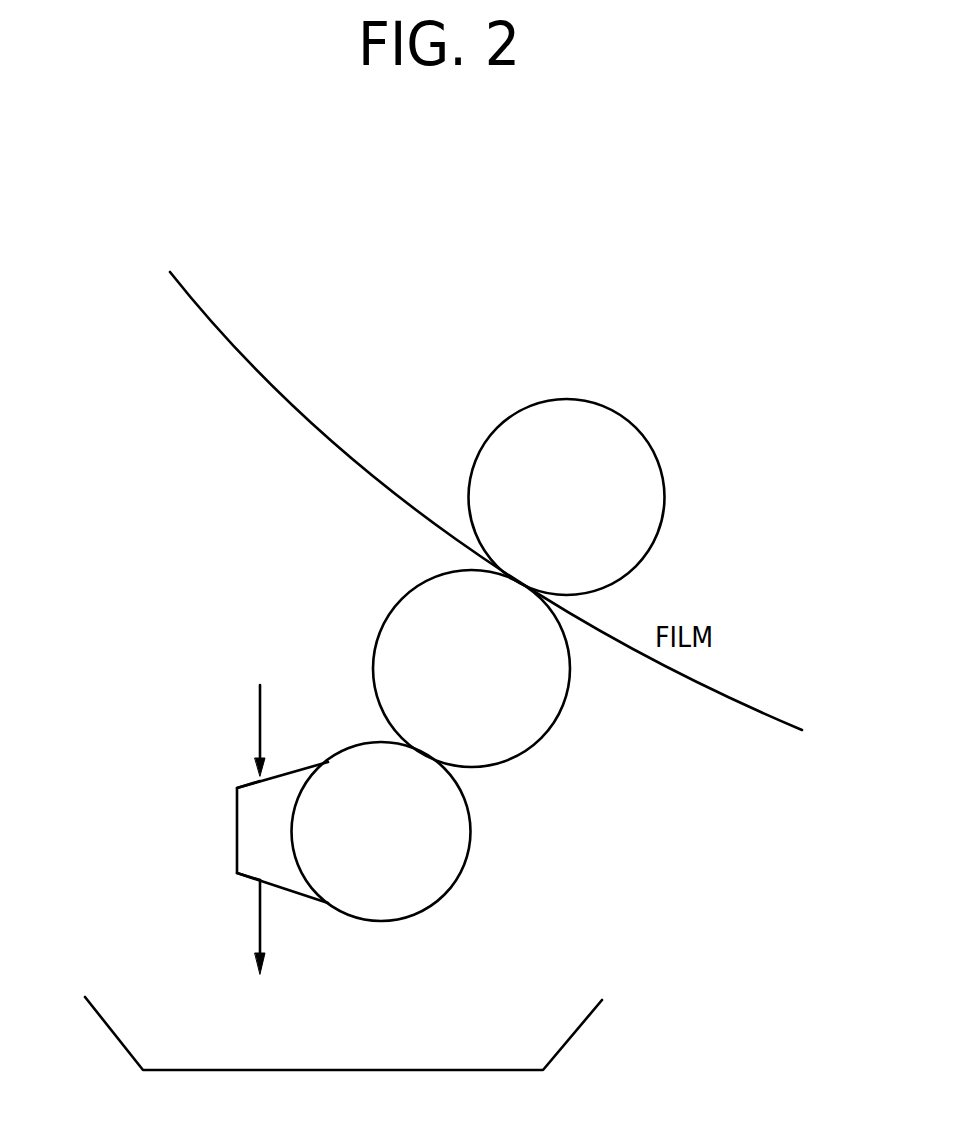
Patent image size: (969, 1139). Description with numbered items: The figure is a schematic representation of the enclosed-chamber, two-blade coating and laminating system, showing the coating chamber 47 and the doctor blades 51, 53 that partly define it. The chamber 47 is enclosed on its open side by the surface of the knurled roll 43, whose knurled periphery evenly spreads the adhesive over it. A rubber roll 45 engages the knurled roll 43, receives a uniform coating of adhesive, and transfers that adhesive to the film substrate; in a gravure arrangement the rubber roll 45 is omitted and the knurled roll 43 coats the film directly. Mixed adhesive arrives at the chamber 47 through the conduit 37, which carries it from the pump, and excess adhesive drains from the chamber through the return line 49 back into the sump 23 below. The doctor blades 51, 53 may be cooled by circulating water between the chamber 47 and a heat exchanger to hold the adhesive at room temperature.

The sump 23 is at (463, 1070).
The conduit 37 is at (260, 705).
The knurled roll 43 is at (447, 837).
The rubber roll 45 is at (537, 717).
The coating chamber 47 is at (252, 826).
The return line 49 is at (260, 938).
The doctor blade 51 is at (243, 787).
The doctor blade 53 is at (243, 880).